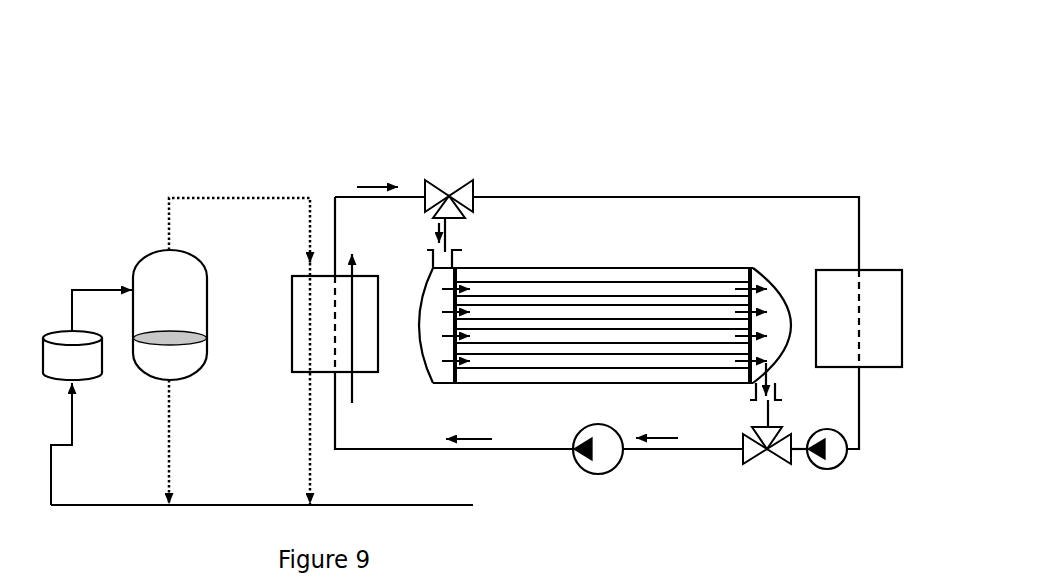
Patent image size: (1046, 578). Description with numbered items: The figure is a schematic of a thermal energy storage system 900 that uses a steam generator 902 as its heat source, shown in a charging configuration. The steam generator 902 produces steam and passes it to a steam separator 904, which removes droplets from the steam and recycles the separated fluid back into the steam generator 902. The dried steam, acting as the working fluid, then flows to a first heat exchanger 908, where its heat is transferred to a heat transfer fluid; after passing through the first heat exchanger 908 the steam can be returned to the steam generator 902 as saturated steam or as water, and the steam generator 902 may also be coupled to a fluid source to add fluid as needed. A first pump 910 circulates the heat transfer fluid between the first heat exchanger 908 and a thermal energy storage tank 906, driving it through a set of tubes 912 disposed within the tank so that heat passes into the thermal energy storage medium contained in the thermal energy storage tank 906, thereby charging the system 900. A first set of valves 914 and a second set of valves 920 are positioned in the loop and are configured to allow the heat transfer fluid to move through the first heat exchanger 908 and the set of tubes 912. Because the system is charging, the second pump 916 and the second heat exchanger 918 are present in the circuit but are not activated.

The system 900 is at (118, 167).
The steam generator 902 is at (93, 385).
The steam separator 904 is at (195, 372).
The thermal energy storage tank 906 is at (597, 267).
The first heat exchanger 908 is at (292, 323).
The first pump 910 is at (613, 468).
The set of tubes 912 is at (718, 357).
The first set of valves 914 is at (768, 471).
The second pump 916 is at (837, 468).
The second heat exchanger 918 is at (902, 318).
The second set of valves 920 is at (449, 176).